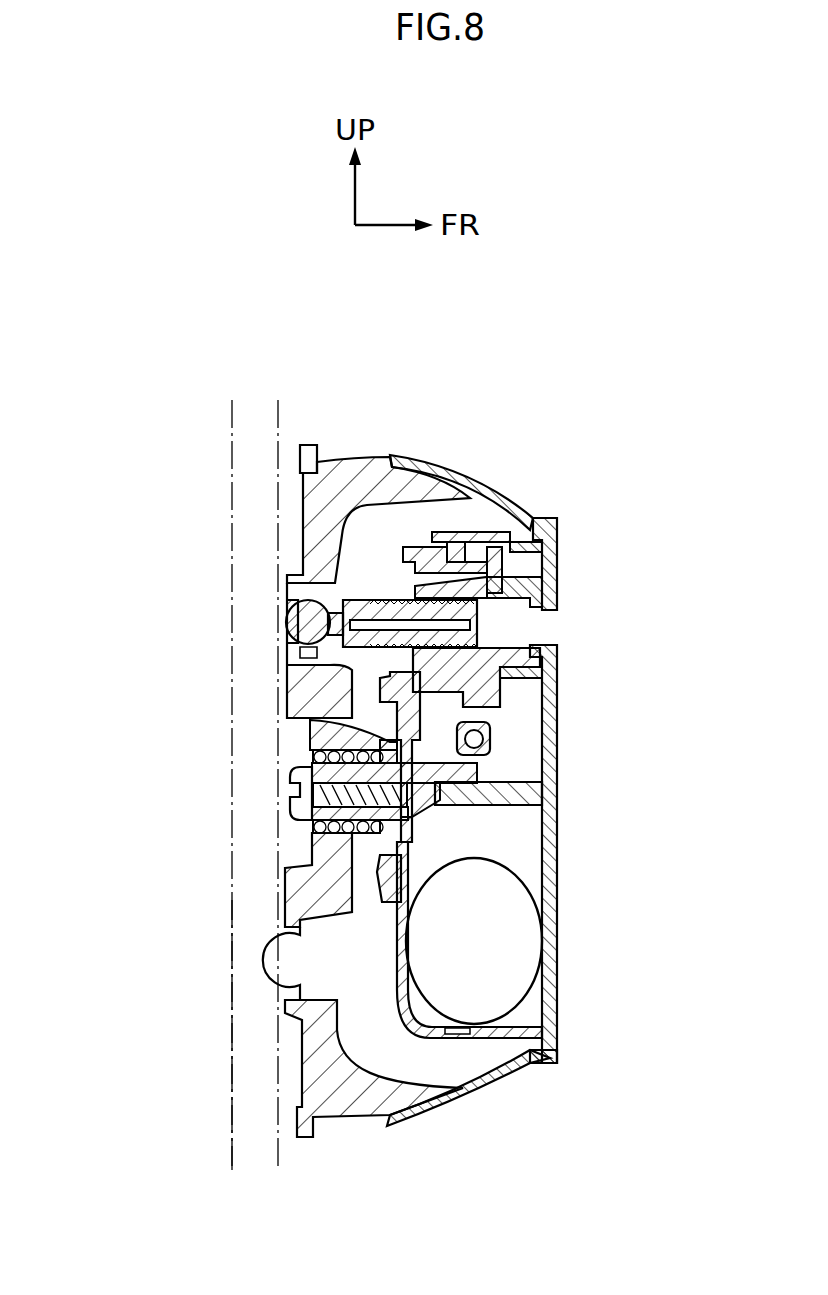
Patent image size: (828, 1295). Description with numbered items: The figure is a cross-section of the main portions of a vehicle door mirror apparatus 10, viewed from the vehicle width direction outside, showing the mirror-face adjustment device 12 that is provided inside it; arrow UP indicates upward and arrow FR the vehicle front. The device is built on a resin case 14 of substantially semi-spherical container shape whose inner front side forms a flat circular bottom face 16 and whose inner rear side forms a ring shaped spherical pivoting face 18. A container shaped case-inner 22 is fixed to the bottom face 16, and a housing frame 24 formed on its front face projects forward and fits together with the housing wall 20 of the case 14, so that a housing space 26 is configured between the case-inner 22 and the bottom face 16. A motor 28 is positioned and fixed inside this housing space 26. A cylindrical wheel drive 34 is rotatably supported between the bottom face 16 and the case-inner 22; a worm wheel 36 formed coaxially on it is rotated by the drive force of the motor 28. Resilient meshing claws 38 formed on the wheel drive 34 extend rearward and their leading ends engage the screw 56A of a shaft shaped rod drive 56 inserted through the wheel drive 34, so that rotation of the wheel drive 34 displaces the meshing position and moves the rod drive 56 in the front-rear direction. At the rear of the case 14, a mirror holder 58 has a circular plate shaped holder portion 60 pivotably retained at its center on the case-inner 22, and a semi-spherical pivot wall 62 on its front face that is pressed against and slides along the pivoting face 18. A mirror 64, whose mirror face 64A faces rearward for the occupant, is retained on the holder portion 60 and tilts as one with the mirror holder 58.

The vehicle door mirror apparatus 10 is at (161, 406).
The mirror-face adjustment device 12 is at (377, 392).
The case 14 is at (567, 768).
The bottom face 16 is at (538, 822).
The pivoting face 18 is at (500, 1066).
The housing wall 20 is at (535, 1048).
The case-inner 22 is at (388, 958).
The housing frame 24 is at (430, 820).
The housing space 26 is at (530, 846).
The motor 28 is at (530, 874).
The wheel drive 34 is at (515, 563).
The worm wheel 36 is at (490, 710).
The meshing claw 38 is at (407, 598).
The rod drive 56 is at (480, 616).
The screw 56A is at (297, 575).
The mirror holder 58 is at (309, 432).
The holder portion 60 is at (320, 1142).
The pivot wall 62 is at (377, 460).
The mirror 64 is at (233, 735).
The mirror face 64A is at (233, 927).